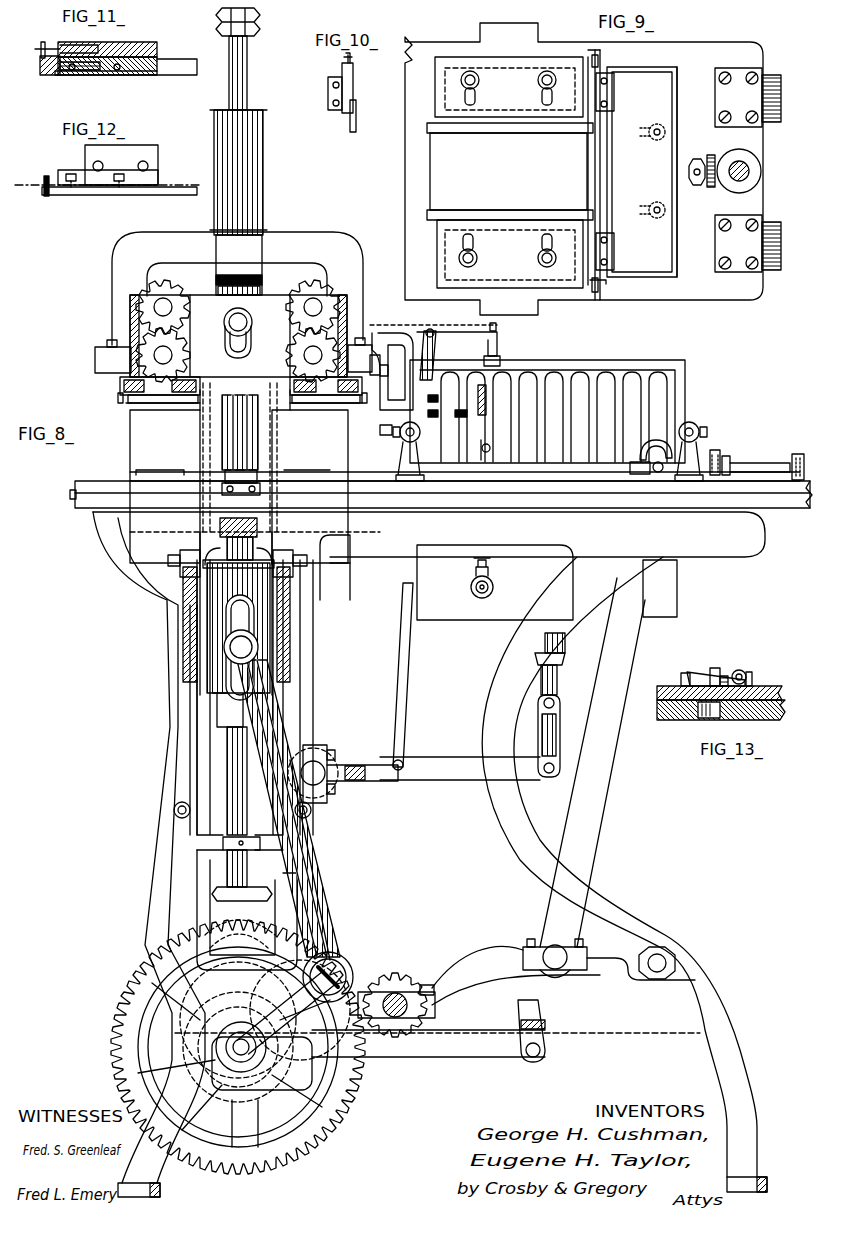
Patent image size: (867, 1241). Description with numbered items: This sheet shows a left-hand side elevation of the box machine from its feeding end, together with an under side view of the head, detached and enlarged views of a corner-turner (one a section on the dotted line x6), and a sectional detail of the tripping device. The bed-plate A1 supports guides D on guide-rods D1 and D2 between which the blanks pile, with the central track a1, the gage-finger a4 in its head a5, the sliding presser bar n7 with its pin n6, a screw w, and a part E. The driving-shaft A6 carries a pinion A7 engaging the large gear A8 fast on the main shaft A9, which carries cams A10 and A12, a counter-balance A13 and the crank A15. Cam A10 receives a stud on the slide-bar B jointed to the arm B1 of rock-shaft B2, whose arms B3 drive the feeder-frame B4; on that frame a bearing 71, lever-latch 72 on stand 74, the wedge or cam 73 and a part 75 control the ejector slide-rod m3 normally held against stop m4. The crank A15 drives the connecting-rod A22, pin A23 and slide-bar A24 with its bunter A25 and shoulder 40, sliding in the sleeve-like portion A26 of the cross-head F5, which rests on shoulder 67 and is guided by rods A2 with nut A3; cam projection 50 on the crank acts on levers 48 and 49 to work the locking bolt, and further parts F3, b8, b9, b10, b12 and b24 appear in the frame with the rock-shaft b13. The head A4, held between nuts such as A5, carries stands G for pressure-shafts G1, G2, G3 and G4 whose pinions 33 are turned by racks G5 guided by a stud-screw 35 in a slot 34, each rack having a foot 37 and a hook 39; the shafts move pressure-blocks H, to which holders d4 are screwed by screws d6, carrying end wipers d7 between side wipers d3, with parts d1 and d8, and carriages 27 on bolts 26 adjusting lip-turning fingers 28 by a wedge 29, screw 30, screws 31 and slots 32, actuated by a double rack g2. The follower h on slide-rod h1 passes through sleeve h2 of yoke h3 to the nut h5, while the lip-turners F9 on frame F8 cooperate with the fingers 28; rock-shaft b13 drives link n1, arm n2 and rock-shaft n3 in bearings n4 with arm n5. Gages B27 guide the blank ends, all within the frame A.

In FIG. 11, the carriage 27 is at (128, 50).
In FIG. 12, the carriage 27 is at (158, 153).
In FIG. 10, the carriage 27 is at (328, 90).
In FIG. 9, the carriage 27 is at (614, 250).
In FIG. 8, the carriage 27 is at (244, 392).
In FIG. 11, the lip-turning finger 28 is at (190, 72).
In FIG. 12, the lip-turning finger 28 is at (190, 195).
In FIG. 10, the lip-turning finger 28 is at (350, 124).
In FIG. 9, the lip-turning finger 28 is at (590, 120).
In FIG. 8, the lip-turning finger 28 is at (233, 405).
In FIG. 11, the slotted wedge 29 is at (42, 65).
In FIG. 12, the slotted wedge 29 is at (93, 186).
In FIG. 9, the slotted wedge 29 is at (598, 60).
In FIG. 8, the slotted wedge 29 is at (240, 404).
In FIG. 11, the screw 30 is at (43, 42).
In FIG. 12, the screw 30 is at (46, 176).
In FIG. 10, the screw 30 is at (353, 57).
In FIG. 9, the screw 30 is at (604, 288).
In FIG. 8, the screw 30 is at (241, 396).
In FIG. 11, the screw 31 is at (72, 71).
In FIG. 12, the screw 31 is at (71, 174).
In FIG. 8, the screw 31 is at (235, 408).
In FIG. 11, the slot 32 is at (55, 71).
In FIG. 9, the bolt 26 is at (608, 81).
In FIG. 8, the bolt 26 is at (244, 410).
In FIG. 9, the pinion 33 is at (752, 164).
In FIG. 8, the pinion 33 is at (150, 294).
In FIG. 8, the slot 34 is at (229, 342).
In FIG. 8, the guiding stud-screw 35 is at (243, 318).
In FIG. 8, the outwardly-extended foot 37 is at (240, 440).
In FIG. 8, the latch or hook 39 is at (241, 471).
In FIG. 8, the shoulder 40 is at (222, 490).
In FIG. 8, the lever 48 is at (313, 720).
In FIG. 8, the lever 49 is at (188, 721).
In FIG. 8, the cam projection 50 is at (348, 962).
In FIG. 8, the shoulder 67 is at (228, 837).
In FIG. 13, the bearing 71 is at (750, 674).
In FIG. 8, the bearing 71 is at (731, 458).
In FIG. 13, the lever-latch 72 is at (700, 672).
In FIG. 8, the lever-latch 72 is at (713, 457).
In FIG. 13, the wedge or cam 73 is at (714, 668).
In FIG. 13, the stand 74 is at (726, 676).
In FIG. 13, the block 75 is at (681, 678).
In FIG. 8, the frame A is at (162, 578).
In FIG. 13, the bed-plate A1 is at (786, 710).
In FIG. 8, the bed-plate A1 is at (70, 496).
In FIG. 9, the guide-rod A2 is at (750, 170).
In FIG. 8, the guide-rod A2 is at (227, 750).
In FIG. 8, the nut A3 is at (242, 894).
In FIG. 9, the head A4 is at (752, 50).
In FIG. 8, the head A4 is at (96, 362).
In FIG. 9, the nut A5 is at (738, 152).
In FIG. 8, the driving-shaft A6 is at (436, 990).
In FIG. 8, the pinion A7 is at (400, 980).
In FIG. 8, the large gear A8 is at (372, 1058).
In FIG. 8, the main shaft A9 is at (241, 1047).
In FIG. 8, the cam A10 is at (262, 940).
In FIG. 8, the cam A12 is at (276, 1125).
In FIG. 8, the counter-balance A13 is at (150, 1045).
In FIG. 8, the crank A15 is at (286, 1012).
In FIG. 8, the connecting-rod A22 is at (316, 872).
In FIG. 8, the pin A23 is at (241, 647).
In FIG. 8, the slide-bar A24 is at (222, 552).
In FIG. 8, the adjustable bunter A25 is at (233, 526).
In FIG. 8, the sleeve-like portion A26 is at (208, 732).
In FIG. 8, the slide-bar B is at (652, 483).
In FIG. 8, the arm B1 is at (556, 1010).
In FIG. 8, the rock-shaft B2 is at (567, 968).
In FIG. 8, the arm B3 is at (550, 906).
In FIG. 13, the feeder-frame B4 is at (766, 690).
In FIG. 8, the feeder-frame B4 is at (810, 506).
In FIG. 8, the edge-guide B27 is at (180, 456).
In FIG. 8, the guide D is at (678, 384).
In FIG. 8, the guide-rod D1 is at (692, 424).
In FIG. 8, the post D2 is at (398, 438).
In FIG. 8, the steam valve E is at (495, 582).
In FIG. 8, the guide F3 is at (255, 539).
In FIG. 8, the sliding cross-head F5 is at (272, 622).
In FIG. 8, the lip-turner-carrying frame F8 is at (328, 555).
In FIG. 8, the lip-turner F9 is at (226, 486).
In FIG. 8, the stand G is at (134, 312).
In FIG. 8, the pressure-shaft G1 is at (180, 308).
In FIG. 8, the pressure-shaft G2 is at (155, 352).
In FIG. 8, the pressure-shaft G3 is at (314, 298).
In FIG. 8, the pressure-shaft G4 is at (313, 355).
In FIG. 8, the reciprocating rack G5 is at (238, 336).
In FIG. 9, the pressure-block H is at (672, 108).
In FIG. 8, the central track a1 is at (273, 1072).
In FIG. 8, the gage-finger a4 is at (480, 455).
In FIG. 8, the head a5 is at (487, 426).
In FIG. 8, the rod b8 is at (557, 682).
In FIG. 8, the nut b9 is at (565, 652).
In FIG. 8, the link b10 is at (560, 734).
In FIG. 8, the lever b12 is at (455, 768).
In FIG. 8, the rock-shaft b13 is at (326, 754).
In FIG. 8, the rod b24 is at (320, 832).
In FIG. 9, the bolt d is at (462, 78).
In FIG. 9, the plate (d') d1 is at (500, 60).
In FIG. 8, the plate (d') d1 is at (120, 384).
In FIG. 9, the side turning plate or wiper d3 is at (530, 124).
In FIG. 9, the holder d4 is at (650, 76).
In FIG. 8, the holder d4 is at (192, 386).
In FIG. 9, the screw d6 is at (655, 202).
In FIG. 9, the end turning plate or wiper d7 is at (585, 142).
In FIG. 8, the block d8 is at (380, 423).
In FIG. 9, the double rack g2 is at (710, 188).
In FIG. 8, the follower h is at (262, 282).
In FIG. 8, the slide-rod h1 is at (247, 52).
In FIG. 8, the sleeve h2 is at (264, 190).
In FIG. 8, the yoke h3 is at (120, 255).
In FIG. 8, the adjustable nut h5 is at (258, 18).
In FIG. 13, the slide-rod m3 is at (740, 670).
In FIG. 8, the slide-rod m3 is at (770, 463).
In FIG. 8, the stop m4 is at (800, 452).
In FIG. 8, the link n1 is at (432, 360).
In FIG. 8, the arm n2 is at (405, 330).
In FIG. 8, the rock-shaft n3 is at (379, 353).
In FIG. 8, the bearing n4 is at (360, 348).
In FIG. 8, the arm n5 is at (453, 332).
In FIG. 8, the pin n6 is at (497, 327).
In FIG. 8, the sliding separating or presser bar n7 is at (498, 350).
In FIG. 8, the screw w is at (385, 782).
In FIG. 12, the section line x6 is at (106, 185).